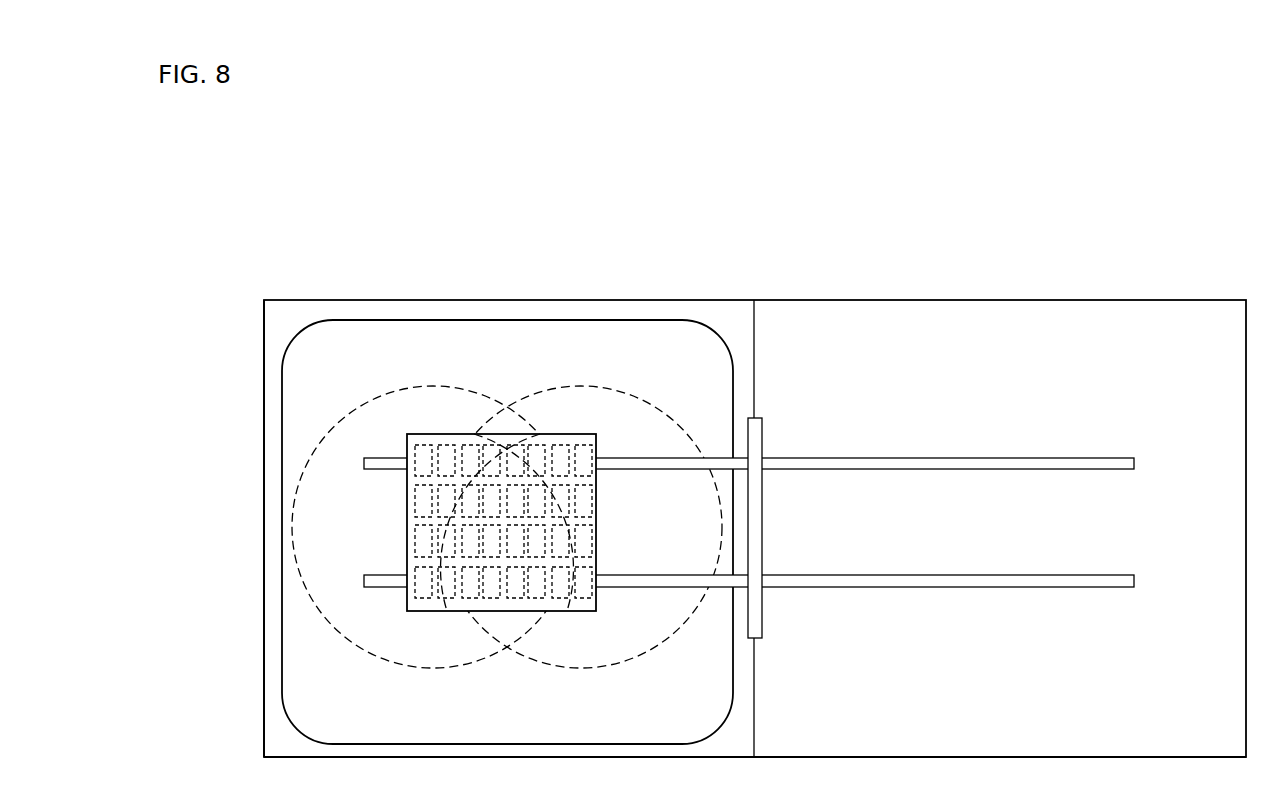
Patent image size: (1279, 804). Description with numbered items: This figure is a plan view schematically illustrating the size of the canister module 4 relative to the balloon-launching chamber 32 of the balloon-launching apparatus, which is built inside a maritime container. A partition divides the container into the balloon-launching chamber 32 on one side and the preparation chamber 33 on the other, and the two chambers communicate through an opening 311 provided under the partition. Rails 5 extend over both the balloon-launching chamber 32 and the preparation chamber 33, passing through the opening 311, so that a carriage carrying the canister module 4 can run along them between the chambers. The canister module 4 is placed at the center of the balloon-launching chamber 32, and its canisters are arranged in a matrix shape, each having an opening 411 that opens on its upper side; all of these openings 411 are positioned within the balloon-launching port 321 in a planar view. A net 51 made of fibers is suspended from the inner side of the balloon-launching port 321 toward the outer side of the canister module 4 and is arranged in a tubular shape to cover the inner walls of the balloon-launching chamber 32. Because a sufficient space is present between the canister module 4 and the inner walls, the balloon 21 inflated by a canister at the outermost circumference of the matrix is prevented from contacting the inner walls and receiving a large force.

The canister module 4 is at (540, 434).
The rails 5 is at (988, 458).
The balloon 21 is at (360, 408).
The balloon-launching chamber 32 is at (477, 300).
The preparation chamber 33 is at (1000, 300).
The net 51 is at (607, 320).
The opening 311 is at (757, 421).
The balloon-launching port 321 is at (265, 354).
The opening 411 is at (592, 537).